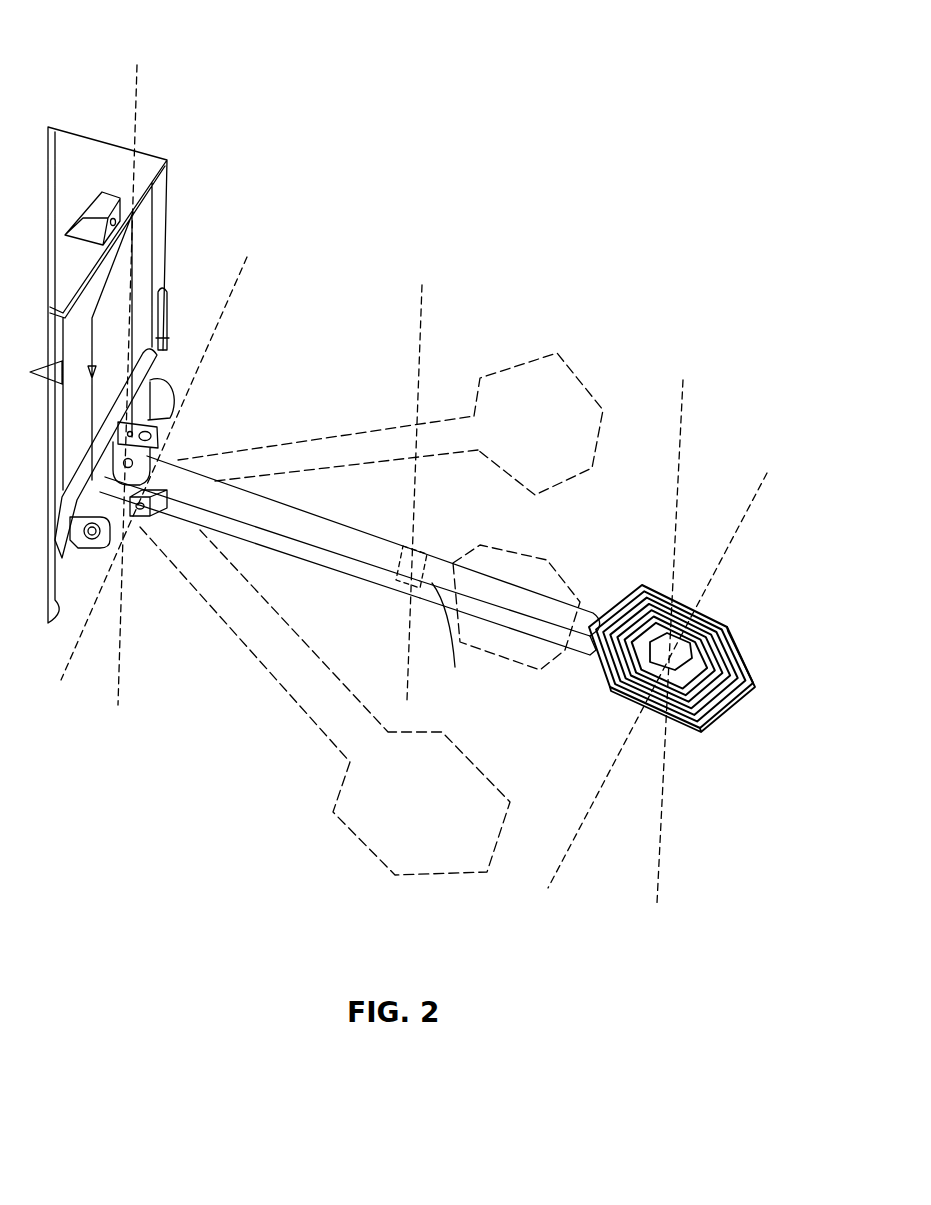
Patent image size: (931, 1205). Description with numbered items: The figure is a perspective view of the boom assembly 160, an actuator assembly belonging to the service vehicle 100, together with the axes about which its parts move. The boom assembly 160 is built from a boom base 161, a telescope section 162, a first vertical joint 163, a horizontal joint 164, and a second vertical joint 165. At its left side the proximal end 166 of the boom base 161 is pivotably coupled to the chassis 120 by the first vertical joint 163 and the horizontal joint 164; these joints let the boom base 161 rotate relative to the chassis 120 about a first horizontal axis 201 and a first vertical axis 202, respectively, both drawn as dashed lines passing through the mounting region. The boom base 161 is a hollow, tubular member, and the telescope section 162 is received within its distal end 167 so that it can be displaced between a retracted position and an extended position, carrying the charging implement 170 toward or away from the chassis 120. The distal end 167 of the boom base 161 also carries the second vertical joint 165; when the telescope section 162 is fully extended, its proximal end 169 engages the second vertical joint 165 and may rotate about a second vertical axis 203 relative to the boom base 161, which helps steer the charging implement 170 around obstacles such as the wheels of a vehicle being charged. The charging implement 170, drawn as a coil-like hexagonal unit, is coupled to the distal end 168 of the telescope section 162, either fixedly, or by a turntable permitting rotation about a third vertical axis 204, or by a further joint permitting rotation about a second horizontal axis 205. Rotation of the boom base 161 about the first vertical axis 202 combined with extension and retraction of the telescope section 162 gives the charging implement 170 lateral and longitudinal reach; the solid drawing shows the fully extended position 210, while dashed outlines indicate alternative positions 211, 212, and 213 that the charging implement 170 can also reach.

The service vehicle 100 is at (172, 120).
The chassis 120 is at (170, 312).
The boom assembly 160 is at (357, 685).
The boom base 161 is at (352, 537).
The telescope section 162 is at (555, 610).
The first vertical joint 163 is at (121, 513).
The horizontal joint 164 is at (178, 458).
The second vertical joint 165 is at (422, 568).
The proximal end 166 is at (205, 493).
The distal end 167 is at (362, 555).
The distal end 168 is at (573, 650).
The proximal end 169 is at (457, 639).
The charging implement 170 is at (748, 638).
The first horizontal axis 201 is at (235, 297).
The first vertical axis 202 is at (133, 115).
The second vertical axis 203 is at (427, 313).
The third vertical axis 204 is at (682, 418).
The second horizontal axis 205 is at (752, 507).
The position 210 is at (723, 722).
The position 211 is at (578, 388).
The position 212 is at (533, 552).
The position 213 is at (482, 772).